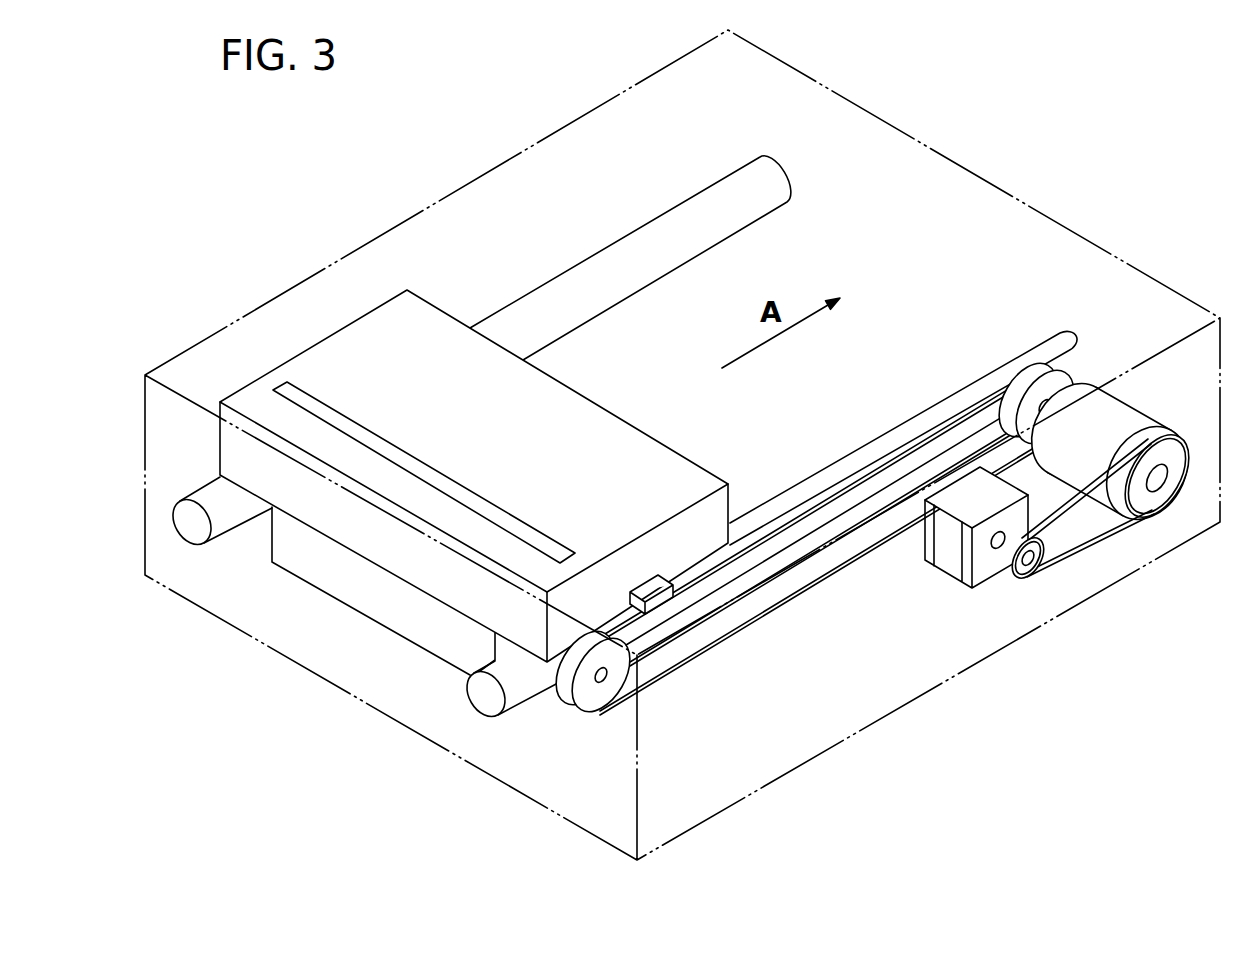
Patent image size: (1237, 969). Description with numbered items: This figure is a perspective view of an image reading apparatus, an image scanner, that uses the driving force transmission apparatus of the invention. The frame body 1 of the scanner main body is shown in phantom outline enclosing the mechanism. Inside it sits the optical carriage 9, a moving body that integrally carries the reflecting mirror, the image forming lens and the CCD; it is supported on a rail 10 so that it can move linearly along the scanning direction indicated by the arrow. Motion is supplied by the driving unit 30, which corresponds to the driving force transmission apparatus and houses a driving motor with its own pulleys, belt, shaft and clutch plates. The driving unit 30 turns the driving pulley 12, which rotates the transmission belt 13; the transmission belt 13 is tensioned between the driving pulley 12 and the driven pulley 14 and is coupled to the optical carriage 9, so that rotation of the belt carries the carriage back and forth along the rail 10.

The frame body 1 is at (608, 98).
The optical carriage 9 is at (352, 345).
The rail 10 is at (197, 543).
The driving pulley 12 is at (1050, 392).
The transmission belt 13 is at (690, 645).
The driven pulley 14 is at (583, 692).
The driving unit 30 is at (1097, 533).